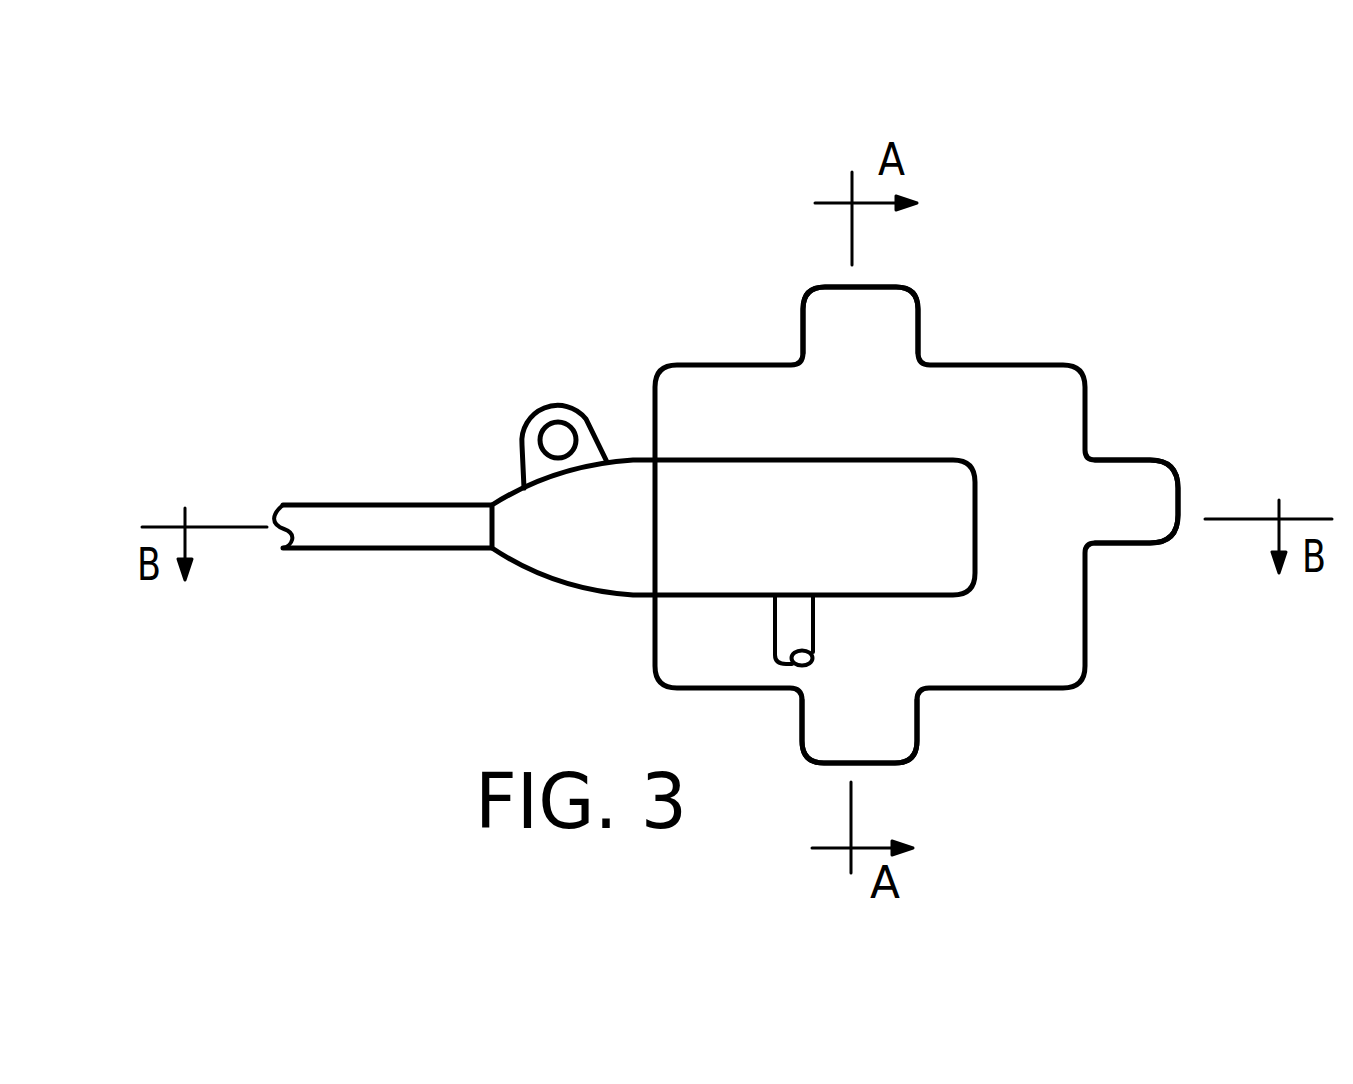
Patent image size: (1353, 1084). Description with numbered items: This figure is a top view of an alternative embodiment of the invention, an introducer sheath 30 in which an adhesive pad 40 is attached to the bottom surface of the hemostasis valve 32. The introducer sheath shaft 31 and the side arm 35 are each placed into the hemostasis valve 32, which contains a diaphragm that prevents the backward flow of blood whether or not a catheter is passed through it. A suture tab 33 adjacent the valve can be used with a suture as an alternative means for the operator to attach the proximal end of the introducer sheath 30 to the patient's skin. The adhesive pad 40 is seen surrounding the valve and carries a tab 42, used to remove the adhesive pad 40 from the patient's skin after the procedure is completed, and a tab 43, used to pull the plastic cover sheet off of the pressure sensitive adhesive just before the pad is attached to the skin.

The introducer sheath 30 is at (512, 328).
The introducer sheath shaft 31 is at (423, 550).
The hemostasis valve 32 is at (762, 457).
The suture tab 33 is at (525, 447).
The side arm 35 is at (812, 628).
The adhesive pad 40 is at (1106, 300).
The tab 42 is at (802, 330).
The tab 43 is at (1122, 458).